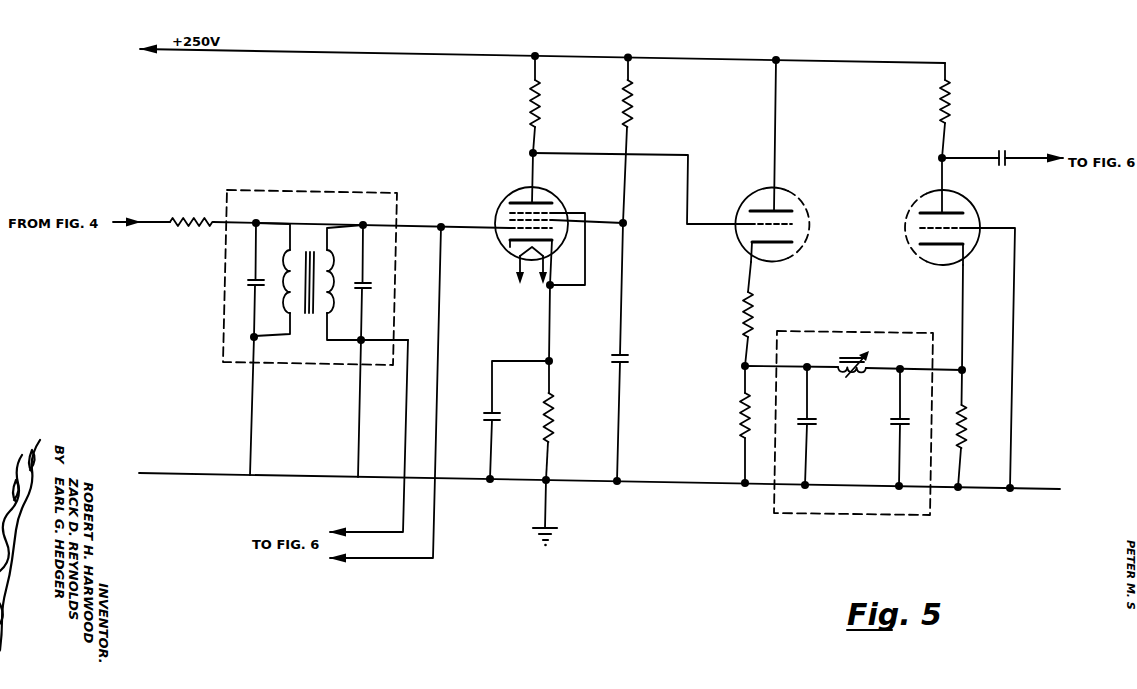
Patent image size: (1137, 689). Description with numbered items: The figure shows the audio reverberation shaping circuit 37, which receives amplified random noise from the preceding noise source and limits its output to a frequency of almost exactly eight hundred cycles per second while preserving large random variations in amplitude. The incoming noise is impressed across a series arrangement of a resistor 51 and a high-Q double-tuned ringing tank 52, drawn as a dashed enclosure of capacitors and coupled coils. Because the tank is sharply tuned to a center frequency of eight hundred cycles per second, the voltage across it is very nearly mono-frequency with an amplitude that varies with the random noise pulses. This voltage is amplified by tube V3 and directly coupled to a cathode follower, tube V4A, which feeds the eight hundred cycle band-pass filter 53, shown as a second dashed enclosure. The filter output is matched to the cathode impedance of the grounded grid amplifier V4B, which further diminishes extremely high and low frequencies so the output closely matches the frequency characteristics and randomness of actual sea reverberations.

The audio reverberation shaping circuit 37 is at (637, 554).
The resistor 51 is at (206, 218).
The ringing tank 52 is at (365, 188).
The band-pass filter 53 is at (829, 527).
The amplifier tube V3 is at (555, 189).
The cathode follower tube V4A is at (796, 197).
The grounded grid amplifier V4B is at (929, 198).